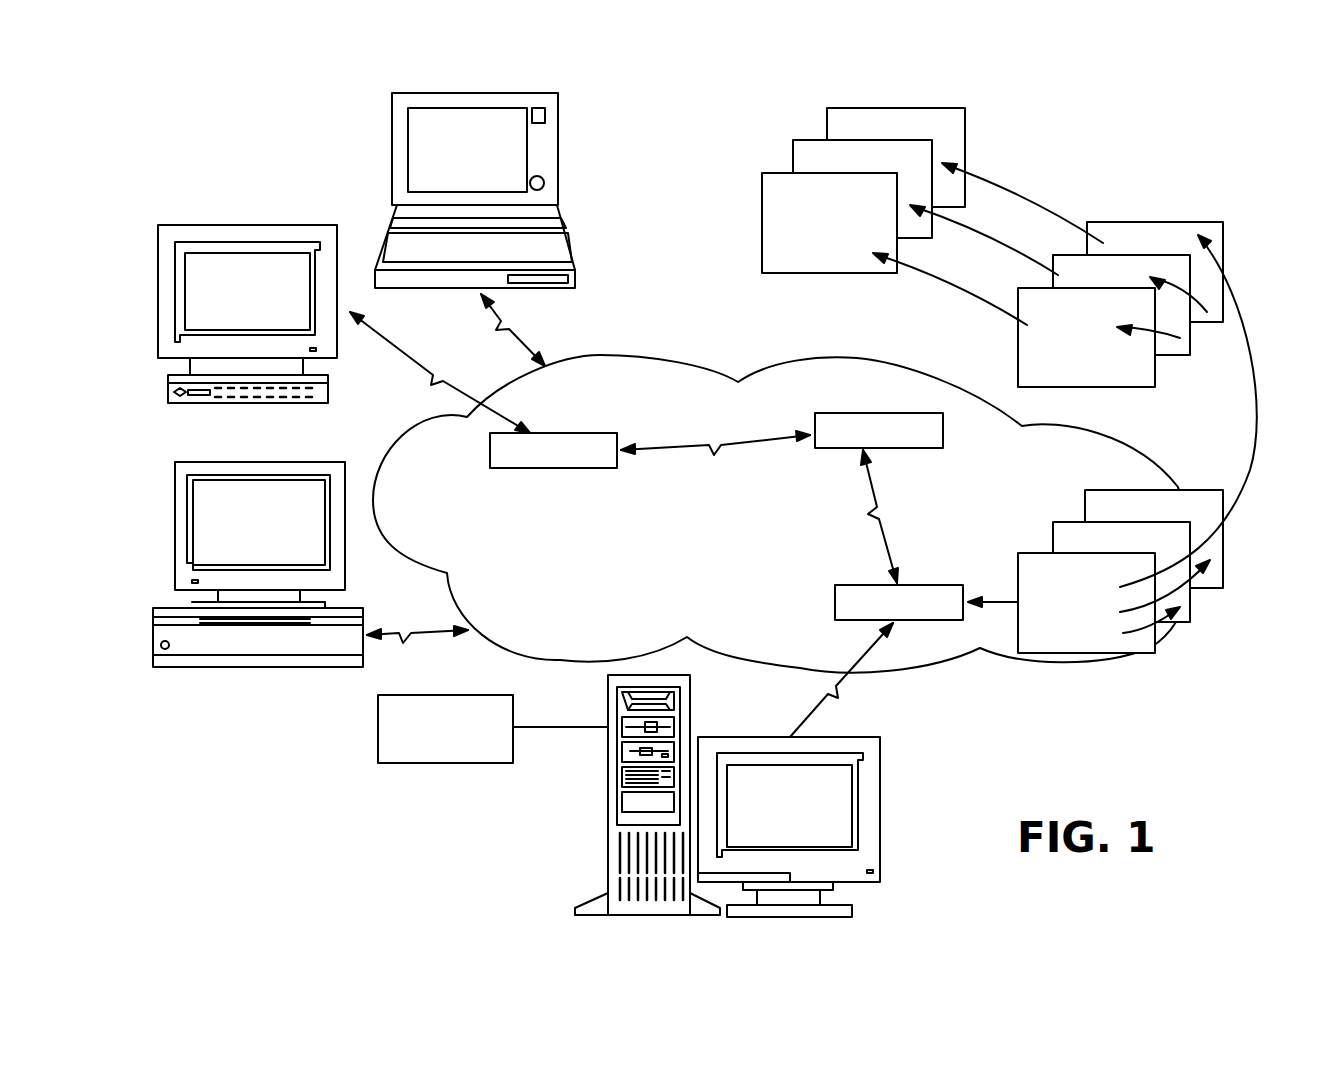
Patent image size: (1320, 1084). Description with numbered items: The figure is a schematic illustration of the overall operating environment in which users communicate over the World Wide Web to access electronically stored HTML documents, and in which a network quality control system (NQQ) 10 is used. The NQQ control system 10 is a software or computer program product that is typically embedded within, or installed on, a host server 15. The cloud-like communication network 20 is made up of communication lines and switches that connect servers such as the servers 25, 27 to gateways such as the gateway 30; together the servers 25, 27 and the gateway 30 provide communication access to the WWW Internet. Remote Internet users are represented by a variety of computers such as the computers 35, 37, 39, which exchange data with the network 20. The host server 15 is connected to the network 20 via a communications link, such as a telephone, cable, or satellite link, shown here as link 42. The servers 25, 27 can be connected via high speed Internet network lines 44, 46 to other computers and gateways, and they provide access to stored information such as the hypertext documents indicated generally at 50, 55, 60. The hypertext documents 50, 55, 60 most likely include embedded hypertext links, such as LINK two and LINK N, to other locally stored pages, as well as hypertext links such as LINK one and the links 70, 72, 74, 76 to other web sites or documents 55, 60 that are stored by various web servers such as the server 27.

The network quality control system 10 is at (378, 750).
The host server 15 is at (607, 720).
The communication network 20 is at (672, 358).
The server 25 is at (877, 585).
The server 27 is at (892, 413).
The gateway 30 is at (547, 470).
The computer 35 is at (572, 240).
The computer 37 is at (308, 225).
The computer 39 is at (308, 462).
The communication link 42 is at (807, 710).
The high speed Internet network line 44 is at (888, 550).
The high speed Internet network line 46 is at (705, 442).
The hypertext documents 50 is at (1232, 559).
The hypertext documents 55 is at (1237, 246).
The hypertext documents 60 is at (778, 156).
The hypertext link 70 is at (1264, 408).
The hypertext link 72 is at (1045, 208).
The hypertext link 74 is at (1008, 243).
The hypertext link 76 is at (957, 283).